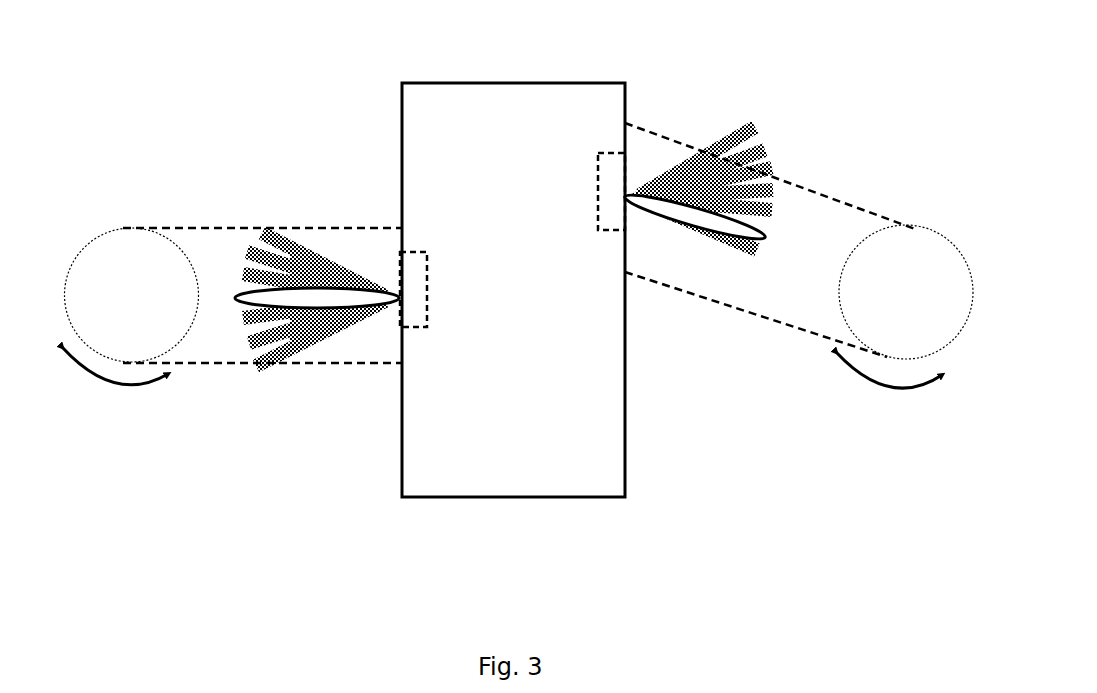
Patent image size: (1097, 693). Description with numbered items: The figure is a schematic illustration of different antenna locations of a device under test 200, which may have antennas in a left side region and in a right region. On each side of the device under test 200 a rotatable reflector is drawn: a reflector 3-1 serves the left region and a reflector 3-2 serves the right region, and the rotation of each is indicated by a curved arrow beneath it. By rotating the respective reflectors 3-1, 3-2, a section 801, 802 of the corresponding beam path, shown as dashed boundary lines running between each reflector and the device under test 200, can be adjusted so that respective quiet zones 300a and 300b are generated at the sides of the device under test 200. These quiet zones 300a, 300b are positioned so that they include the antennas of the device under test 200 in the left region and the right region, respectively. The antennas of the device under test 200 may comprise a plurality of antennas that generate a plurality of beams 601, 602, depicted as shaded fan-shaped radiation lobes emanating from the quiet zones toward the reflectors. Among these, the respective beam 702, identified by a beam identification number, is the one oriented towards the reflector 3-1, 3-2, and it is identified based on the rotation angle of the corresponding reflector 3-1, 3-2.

The device under test 200 is at (513, 290).
The reflector 3-1 is at (107, 228).
The reflector 3-2 is at (938, 230).
The section of beam path 801 is at (195, 228).
The section of beam path 802 is at (845, 202).
The beams 601 is at (302, 245).
The beams 602 is at (735, 132).
The beam 702 is at (318, 297).
The quiet zone 300a is at (413, 252).
The quiet zone 300b is at (605, 215).